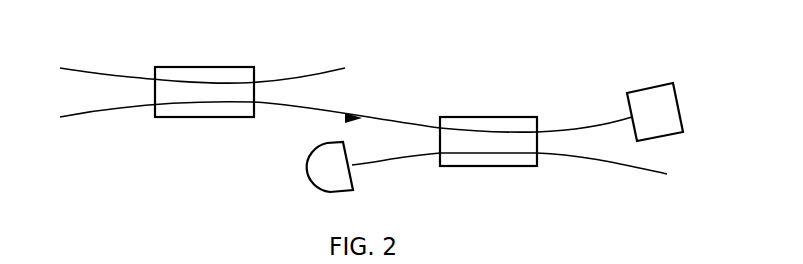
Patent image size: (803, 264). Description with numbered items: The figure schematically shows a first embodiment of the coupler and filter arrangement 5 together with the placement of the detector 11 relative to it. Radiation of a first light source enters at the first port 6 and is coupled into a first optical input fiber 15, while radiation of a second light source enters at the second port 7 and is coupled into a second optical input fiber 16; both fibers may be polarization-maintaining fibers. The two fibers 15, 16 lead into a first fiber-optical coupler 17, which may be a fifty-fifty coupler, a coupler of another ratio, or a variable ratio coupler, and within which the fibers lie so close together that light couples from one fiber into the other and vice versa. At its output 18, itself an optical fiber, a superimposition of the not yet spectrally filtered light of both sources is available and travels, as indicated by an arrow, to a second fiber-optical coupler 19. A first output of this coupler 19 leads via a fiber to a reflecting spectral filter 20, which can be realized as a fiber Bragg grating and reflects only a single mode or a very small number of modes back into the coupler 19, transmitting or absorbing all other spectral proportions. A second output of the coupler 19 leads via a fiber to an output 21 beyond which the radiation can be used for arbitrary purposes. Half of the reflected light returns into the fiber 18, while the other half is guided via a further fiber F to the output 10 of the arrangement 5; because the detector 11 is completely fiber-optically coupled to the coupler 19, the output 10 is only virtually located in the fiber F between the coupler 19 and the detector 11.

The coupler and filter arrangement 5 is at (394, 70).
The first port 6 is at (70, 58).
The second port 7 is at (71, 130).
The output 10 is at (400, 172).
The detector 11 is at (318, 181).
The first optical input fiber 15 is at (128, 78).
The second optical input fiber 16 is at (128, 106).
The first fiber-optical coupler 17 is at (220, 67).
The output fiber 18 is at (280, 109).
The second fiber-optical coupler 19 is at (505, 117).
The spectral filter 20 is at (645, 124).
The output 21 is at (658, 184).
The further fiber F is at (415, 158).